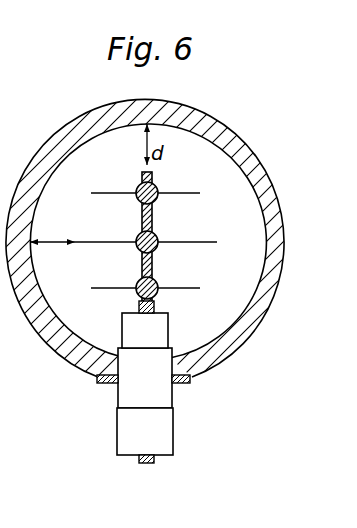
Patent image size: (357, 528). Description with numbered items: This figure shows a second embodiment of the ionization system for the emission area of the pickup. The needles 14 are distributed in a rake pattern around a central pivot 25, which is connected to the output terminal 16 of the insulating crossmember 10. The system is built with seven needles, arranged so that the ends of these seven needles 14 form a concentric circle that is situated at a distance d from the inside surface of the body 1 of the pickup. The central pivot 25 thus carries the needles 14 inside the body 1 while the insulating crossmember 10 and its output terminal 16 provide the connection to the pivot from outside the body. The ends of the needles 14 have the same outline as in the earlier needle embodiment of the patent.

The body 1 is at (238, 130).
The needles 14 is at (217, 242).
The central pivot 25 is at (152, 265).
The output terminal 16 is at (155, 304).
The insulating crossmember 10 is at (123, 436).